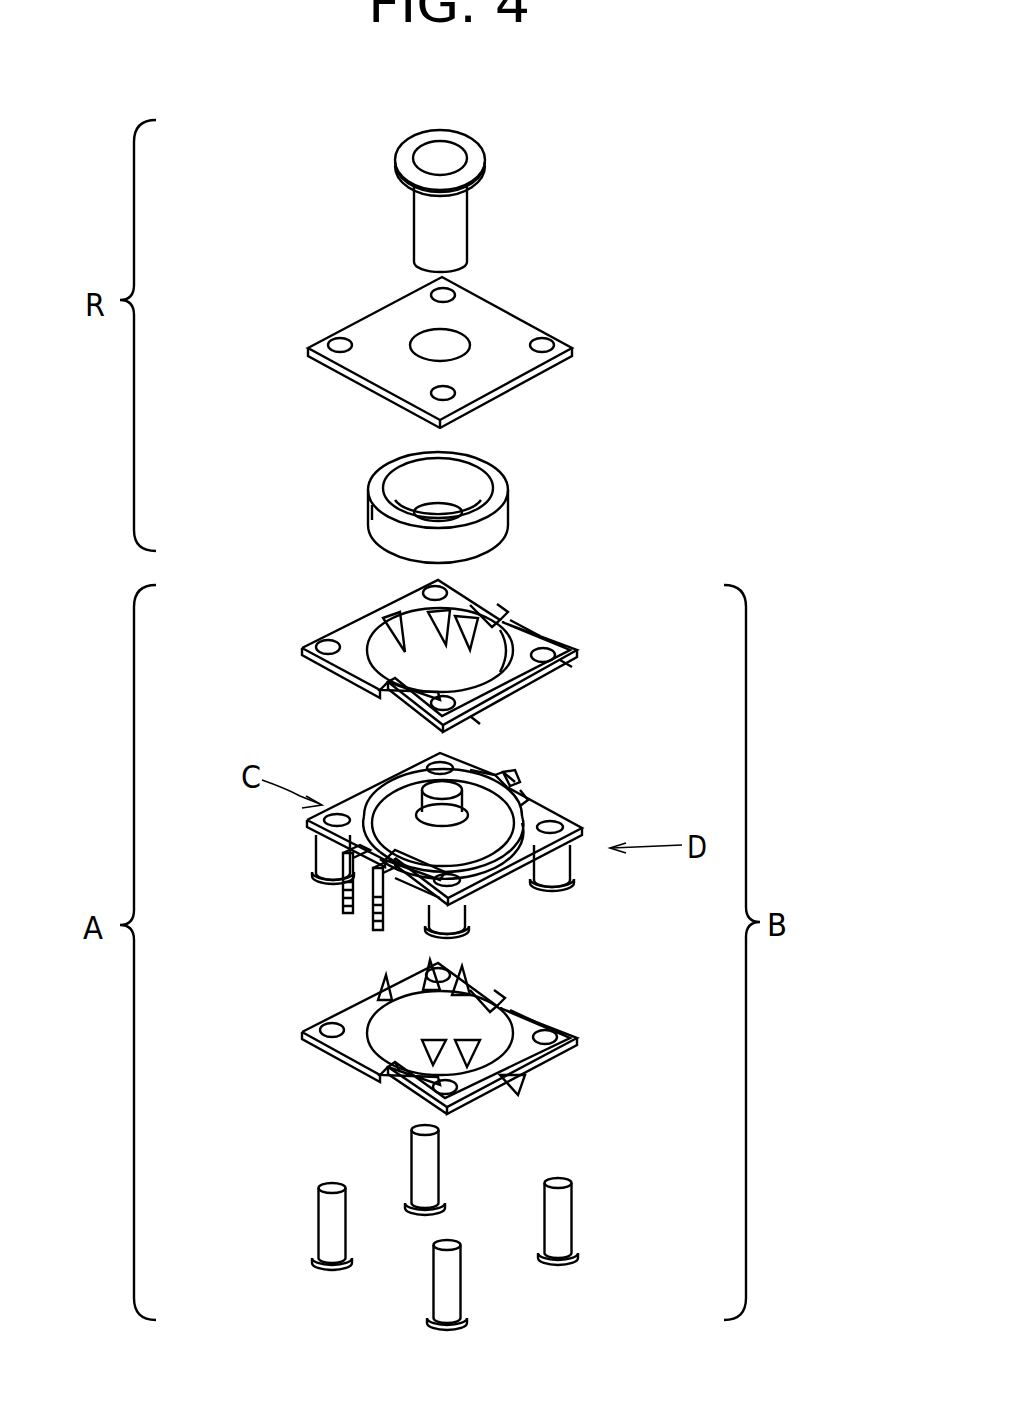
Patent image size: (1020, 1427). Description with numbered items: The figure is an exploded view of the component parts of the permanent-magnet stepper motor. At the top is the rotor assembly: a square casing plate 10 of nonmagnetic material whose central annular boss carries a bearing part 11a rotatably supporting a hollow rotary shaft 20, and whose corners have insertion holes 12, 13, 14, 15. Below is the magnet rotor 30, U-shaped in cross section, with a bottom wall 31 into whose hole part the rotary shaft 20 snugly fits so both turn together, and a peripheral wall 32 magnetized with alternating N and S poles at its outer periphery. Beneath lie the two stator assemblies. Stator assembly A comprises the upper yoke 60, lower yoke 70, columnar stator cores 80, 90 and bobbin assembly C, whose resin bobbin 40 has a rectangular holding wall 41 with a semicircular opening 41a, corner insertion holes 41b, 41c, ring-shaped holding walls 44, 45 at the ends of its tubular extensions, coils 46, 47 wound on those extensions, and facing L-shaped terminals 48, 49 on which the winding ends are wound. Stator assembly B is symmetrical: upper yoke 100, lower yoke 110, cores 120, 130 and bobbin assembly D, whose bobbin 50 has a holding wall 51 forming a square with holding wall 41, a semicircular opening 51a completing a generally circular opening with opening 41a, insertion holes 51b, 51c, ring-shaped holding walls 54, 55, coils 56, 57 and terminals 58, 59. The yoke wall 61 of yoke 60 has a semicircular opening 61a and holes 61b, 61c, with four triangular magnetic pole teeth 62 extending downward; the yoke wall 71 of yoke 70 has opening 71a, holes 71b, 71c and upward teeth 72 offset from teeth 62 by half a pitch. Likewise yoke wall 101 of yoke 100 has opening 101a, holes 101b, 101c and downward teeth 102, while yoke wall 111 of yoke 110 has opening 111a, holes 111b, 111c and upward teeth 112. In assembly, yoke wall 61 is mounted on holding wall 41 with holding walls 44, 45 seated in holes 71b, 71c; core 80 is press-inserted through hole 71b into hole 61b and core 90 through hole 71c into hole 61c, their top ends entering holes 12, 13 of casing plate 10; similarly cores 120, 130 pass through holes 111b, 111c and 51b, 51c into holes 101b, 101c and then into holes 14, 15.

The casing plate 10 is at (372, 362).
The bearing part 11a is at (465, 330).
The insertion hole 12 is at (340, 335).
The insertion hole 13 is at (433, 290).
The insertion hole 14 is at (415, 412).
The insertion hole 15 is at (547, 342).
The hollow rotary shaft 20 is at (423, 213).
The magnet rotor 30 is at (500, 484).
The bottom wall 31 is at (445, 500).
The peripheral wall 32 is at (378, 520).
The bobbin 40 is at (352, 797).
The holding wall 41 is at (512, 780).
The semicircular opening 41a is at (405, 778).
The insertion hole 41b is at (325, 820).
The insertion hole 41c is at (478, 772).
The ring-shaped holding wall 44 is at (318, 876).
The ring-shaped holding wall 45 is at (436, 806).
The coil 46 is at (316, 850).
The coil 47 is at (425, 800).
The L-shaped electrical terminal 48 is at (340, 905).
The L-shaped electrical terminal 49 is at (518, 788).
The bobbin 50 is at (542, 880).
The holding wall 51 is at (555, 806).
The semicircular opening 51a is at (408, 900).
The insertion hole 51b is at (462, 882).
The insertion hole 51c is at (562, 822).
The ring-shaped holding wall 54 is at (462, 915).
The ring-shaped holding wall 55 is at (582, 872).
The coil 56 is at (480, 910).
The coil 57 is at (572, 884).
The L-shaped electrical terminal 58 is at (370, 925).
The L-shaped electrical terminal 59 is at (528, 795).
The upper yoke 60 is at (346, 611).
The yoke wall 61 is at (468, 600).
The semicircular opening 61a is at (480, 650).
The insertion hole 61b is at (320, 648).
The insertion hole 61c is at (432, 590).
The magnetic pole teeth 62 is at (416, 647).
The lower yoke 70 is at (292, 1040).
The yoke wall 71 is at (358, 1006).
The semicircular opening 71a is at (412, 1012).
The insertion hole 71b is at (322, 1022).
The insertion hole 71c is at (452, 966).
The magnetic pole teeth 72 is at (467, 1016).
The columnar stator core 80 is at (322, 1222).
The columnar stator core 90 is at (412, 1160).
The upper yoke 100 is at (598, 651).
The yoke wall 101 is at (520, 632).
The semicircular opening 101a is at (550, 640).
The insertion hole 101b is at (408, 712).
The insertion hole 101c is at (565, 665).
The magnetic pole teeth 102 is at (495, 712).
The lower yoke 110 is at (590, 1037).
The yoke wall 111 is at (525, 1020).
The semicircular opening 111a is at (398, 1082).
The insertion hole 111b is at (452, 1100).
The insertion hole 111c is at (566, 1048).
The magnetic pole teeth 112 is at (515, 1080).
The columnar stator core 120 is at (462, 1275).
The columnar stator core 130 is at (573, 1213).